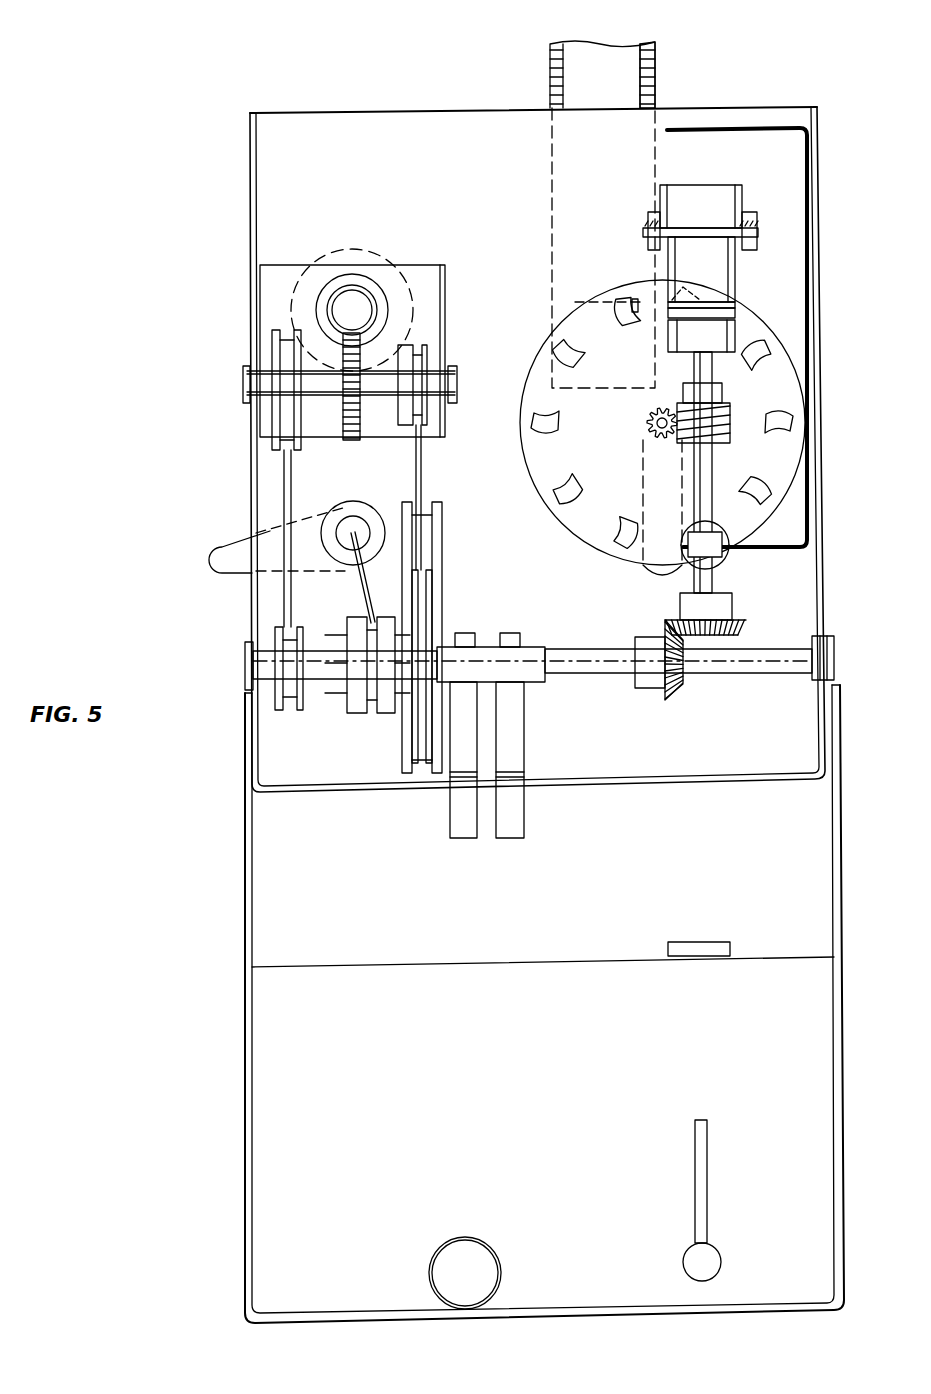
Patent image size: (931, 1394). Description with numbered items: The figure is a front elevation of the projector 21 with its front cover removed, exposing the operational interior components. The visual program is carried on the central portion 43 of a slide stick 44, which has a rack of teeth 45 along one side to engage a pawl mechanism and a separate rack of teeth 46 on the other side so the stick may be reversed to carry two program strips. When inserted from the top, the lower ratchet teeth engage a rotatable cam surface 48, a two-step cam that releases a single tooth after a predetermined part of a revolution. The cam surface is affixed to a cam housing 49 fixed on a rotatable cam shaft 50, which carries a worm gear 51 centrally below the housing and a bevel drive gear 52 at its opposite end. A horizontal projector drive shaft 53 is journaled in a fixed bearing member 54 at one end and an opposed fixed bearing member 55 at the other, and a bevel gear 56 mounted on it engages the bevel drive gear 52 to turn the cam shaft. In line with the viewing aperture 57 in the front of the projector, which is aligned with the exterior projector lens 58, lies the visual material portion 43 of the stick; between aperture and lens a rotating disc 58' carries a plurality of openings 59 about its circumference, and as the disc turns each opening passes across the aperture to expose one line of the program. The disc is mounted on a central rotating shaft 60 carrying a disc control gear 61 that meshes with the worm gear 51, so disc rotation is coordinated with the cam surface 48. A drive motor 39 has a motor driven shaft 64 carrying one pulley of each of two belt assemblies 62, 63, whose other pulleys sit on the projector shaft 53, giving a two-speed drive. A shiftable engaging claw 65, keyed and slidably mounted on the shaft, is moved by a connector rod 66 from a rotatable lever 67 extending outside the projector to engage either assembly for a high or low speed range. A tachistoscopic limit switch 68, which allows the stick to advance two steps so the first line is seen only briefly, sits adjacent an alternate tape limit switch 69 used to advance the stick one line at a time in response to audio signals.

The projector 21 is at (207, 497).
The drive motor 39 is at (362, 252).
The central portion of slide stick 43 is at (585, 77).
The slide stick 44 is at (632, 33).
The rack of teeth 45 is at (650, 82).
The separate rack of teeth 46 is at (553, 60).
The rotatable cam surface 48 is at (748, 228).
The cam housing 49 is at (736, 277).
The cam shaft 50 is at (713, 378).
The worm gear 51 is at (730, 418).
The bevel drive gear 52 is at (718, 607).
The projector drive shaft 53 is at (606, 670).
The fixed bearing member 54 is at (838, 656).
The opposed fixed bearing member 55 is at (243, 664).
The bevel gear 56 is at (655, 690).
The viewing aperture 57 is at (577, 300).
The projector lens 58 is at (643, 422).
The rotating disc 58' is at (643, 422).
The openings 59 is at (570, 505).
The central rotating shaft 60 is at (650, 432).
The disc control gear 61 is at (648, 416).
The belt assembly 62 is at (424, 481).
The belt assembly 63 is at (294, 500).
The motor driven shaft 64 is at (328, 405).
The shiftable engaging claw 65 is at (352, 705).
The connector rod 66 is at (363, 583).
The rotatable lever 67 is at (216, 567).
The tachistoscopic limit switch 68 is at (453, 823).
The tape limit switch 69 is at (522, 822).